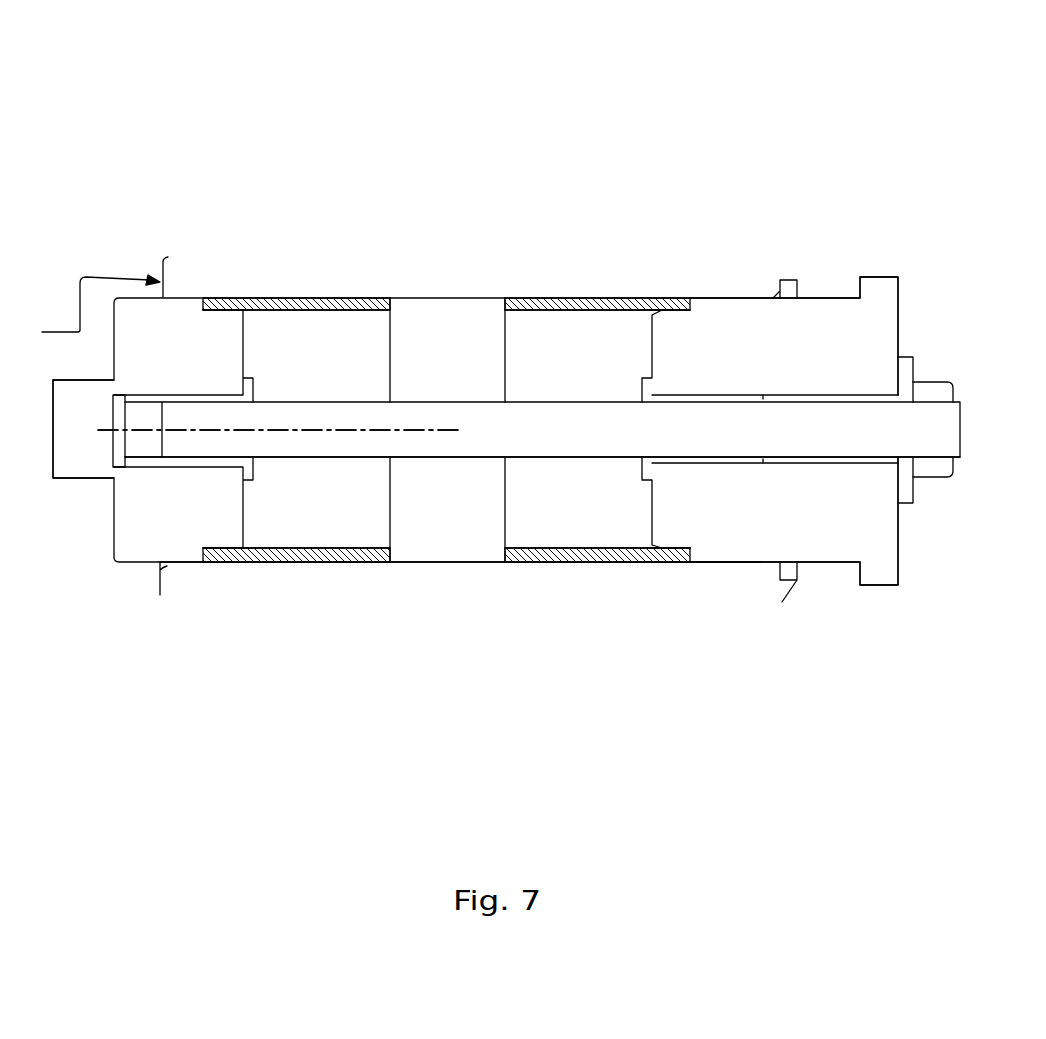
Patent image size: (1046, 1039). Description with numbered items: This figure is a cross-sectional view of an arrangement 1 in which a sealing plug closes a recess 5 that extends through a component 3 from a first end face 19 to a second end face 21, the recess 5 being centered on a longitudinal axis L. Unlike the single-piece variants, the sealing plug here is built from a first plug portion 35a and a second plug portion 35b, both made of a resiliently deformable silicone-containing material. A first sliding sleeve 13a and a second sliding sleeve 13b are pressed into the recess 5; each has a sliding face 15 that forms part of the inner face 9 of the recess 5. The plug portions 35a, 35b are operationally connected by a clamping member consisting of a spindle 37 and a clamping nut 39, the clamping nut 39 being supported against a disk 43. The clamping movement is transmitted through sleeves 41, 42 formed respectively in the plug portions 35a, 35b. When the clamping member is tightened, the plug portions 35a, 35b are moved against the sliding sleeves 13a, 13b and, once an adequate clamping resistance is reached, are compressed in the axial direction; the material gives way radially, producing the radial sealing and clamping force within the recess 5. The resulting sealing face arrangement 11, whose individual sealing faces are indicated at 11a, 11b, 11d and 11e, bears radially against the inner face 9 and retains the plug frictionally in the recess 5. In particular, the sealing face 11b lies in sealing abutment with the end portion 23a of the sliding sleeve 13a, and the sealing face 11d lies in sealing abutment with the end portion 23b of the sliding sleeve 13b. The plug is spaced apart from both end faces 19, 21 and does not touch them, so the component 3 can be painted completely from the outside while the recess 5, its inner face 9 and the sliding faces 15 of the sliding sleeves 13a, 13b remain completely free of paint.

The actuator assembly 1 is at (283, 95).
The component 3 is at (365, 268).
The recess 5 is at (88, 325).
The inner face 9 is at (472, 294).
The sealing face arrangement 11 is at (640, 753).
The first shaft section 11a is at (177, 572).
The sealing face 11b is at (215, 572).
The sealing face 11d is at (663, 572).
The fifth shaft section 11e is at (727, 572).
The first sliding sleeve 13a is at (323, 297).
The second sliding sleeve 13b is at (588, 297).
The sliding face 15 is at (300, 320).
The first end face 19 is at (803, 270).
The second end face 21 is at (150, 281).
The end portion 23a is at (240, 542).
The end portion 23b is at (650, 292).
The first plug portion 35a is at (223, 485).
The second plug portion 35b is at (673, 513).
The spindle 37 is at (440, 425).
The clamping nut 39 is at (935, 392).
The sleeve 41 is at (183, 396).
The sleeve 42 is at (703, 395).
The disk 43 is at (905, 357).
The longitudinal axis L is at (366, 432).